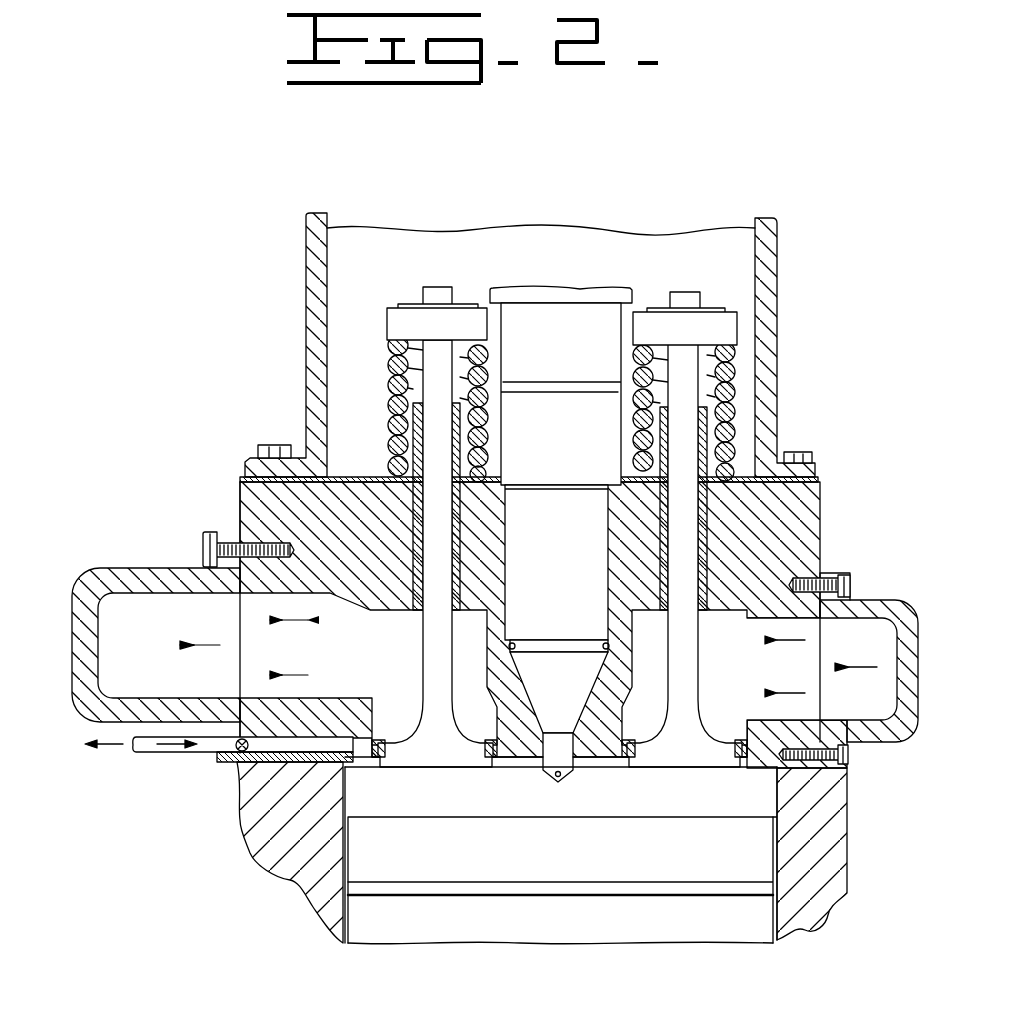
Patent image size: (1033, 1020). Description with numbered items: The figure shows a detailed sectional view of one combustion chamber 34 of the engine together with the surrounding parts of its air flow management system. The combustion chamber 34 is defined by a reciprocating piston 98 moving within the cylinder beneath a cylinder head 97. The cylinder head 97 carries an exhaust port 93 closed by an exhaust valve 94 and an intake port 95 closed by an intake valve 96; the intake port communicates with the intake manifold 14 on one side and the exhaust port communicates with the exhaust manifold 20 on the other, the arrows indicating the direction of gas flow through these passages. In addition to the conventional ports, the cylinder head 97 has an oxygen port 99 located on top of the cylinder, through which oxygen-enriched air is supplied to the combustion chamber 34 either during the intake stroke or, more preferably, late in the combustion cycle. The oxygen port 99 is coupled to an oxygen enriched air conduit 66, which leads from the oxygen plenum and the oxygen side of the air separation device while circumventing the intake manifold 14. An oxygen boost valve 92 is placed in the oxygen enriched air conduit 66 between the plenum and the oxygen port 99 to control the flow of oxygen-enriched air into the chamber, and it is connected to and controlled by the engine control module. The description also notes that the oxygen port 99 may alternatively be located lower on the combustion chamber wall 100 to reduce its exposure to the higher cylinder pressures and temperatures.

The intake manifold 14 is at (855, 651).
The exhaust manifold 20 is at (160, 632).
The combustion chamber 34 is at (615, 810).
The oxygen enriched air conduit 66 is at (222, 747).
The oxygen boost valve 92 is at (240, 752).
The exhaust port 93 is at (380, 740).
The exhaust valve 94 is at (430, 626).
The intake port 95 is at (625, 745).
The intake valve 96 is at (680, 630).
The cylinder head 97 is at (808, 518).
The piston 98 is at (703, 927).
The oxygen port 99 is at (352, 760).
The combustion chamber wall 100 is at (847, 835).